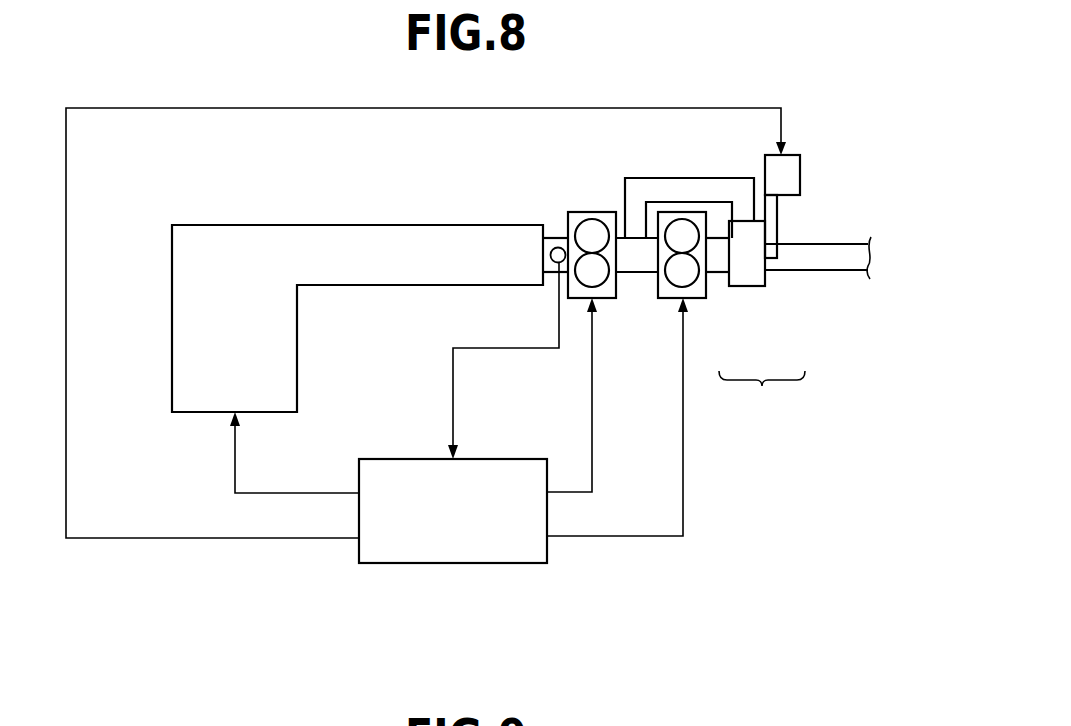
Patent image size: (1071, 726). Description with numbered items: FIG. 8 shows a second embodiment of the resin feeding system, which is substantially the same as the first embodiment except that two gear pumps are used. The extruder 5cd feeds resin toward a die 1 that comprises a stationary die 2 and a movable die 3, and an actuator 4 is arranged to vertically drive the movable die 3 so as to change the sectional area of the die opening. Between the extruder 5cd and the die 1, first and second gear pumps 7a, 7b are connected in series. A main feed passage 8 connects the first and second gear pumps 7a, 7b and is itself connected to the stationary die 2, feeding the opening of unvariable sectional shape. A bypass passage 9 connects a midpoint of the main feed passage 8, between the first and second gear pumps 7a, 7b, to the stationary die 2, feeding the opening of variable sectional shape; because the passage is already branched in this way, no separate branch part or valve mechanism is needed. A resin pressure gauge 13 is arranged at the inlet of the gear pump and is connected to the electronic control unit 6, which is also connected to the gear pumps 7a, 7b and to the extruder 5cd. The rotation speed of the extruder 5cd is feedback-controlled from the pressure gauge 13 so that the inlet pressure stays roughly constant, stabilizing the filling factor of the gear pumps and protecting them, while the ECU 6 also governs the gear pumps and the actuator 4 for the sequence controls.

The die 1 is at (762, 394).
The stationary die 2 is at (749, 287).
The movable die 3 is at (772, 256).
The actuator 4 is at (790, 172).
The extruder 5cd is at (186, 313).
The electronic control unit (ECU) 6 is at (460, 564).
The first gear pump 7a is at (588, 227).
The second gear pump 7b is at (680, 228).
The main feed passage 8 is at (715, 245).
The bypass passage 9 is at (710, 189).
The resin pressure gauge 13 is at (559, 243).